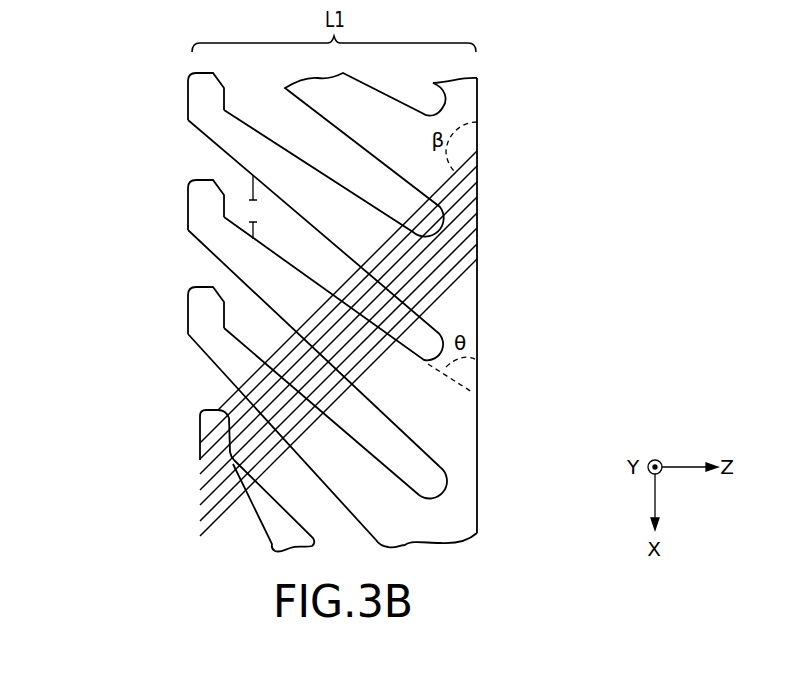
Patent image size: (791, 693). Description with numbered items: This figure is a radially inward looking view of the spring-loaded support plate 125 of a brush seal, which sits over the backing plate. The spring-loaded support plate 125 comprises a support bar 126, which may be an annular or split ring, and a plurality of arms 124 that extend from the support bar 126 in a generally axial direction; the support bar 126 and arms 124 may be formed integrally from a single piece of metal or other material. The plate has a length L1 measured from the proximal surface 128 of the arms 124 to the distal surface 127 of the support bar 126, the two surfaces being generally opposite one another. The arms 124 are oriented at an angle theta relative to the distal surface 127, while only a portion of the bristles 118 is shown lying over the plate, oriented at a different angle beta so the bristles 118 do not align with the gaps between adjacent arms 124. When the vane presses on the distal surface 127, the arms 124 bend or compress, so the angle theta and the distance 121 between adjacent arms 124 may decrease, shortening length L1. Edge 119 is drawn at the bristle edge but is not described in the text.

The spring-loaded support plate 125 is at (150, 92).
The arms 124 is at (211, 127).
The distance between adjacent arms 121 is at (253, 207).
The proximal surface 128 is at (190, 302).
The edge 119 is at (488, 164).
The bristles 118 is at (469, 202).
The support bar 126 is at (440, 427).
The distal surface 127 is at (478, 468).